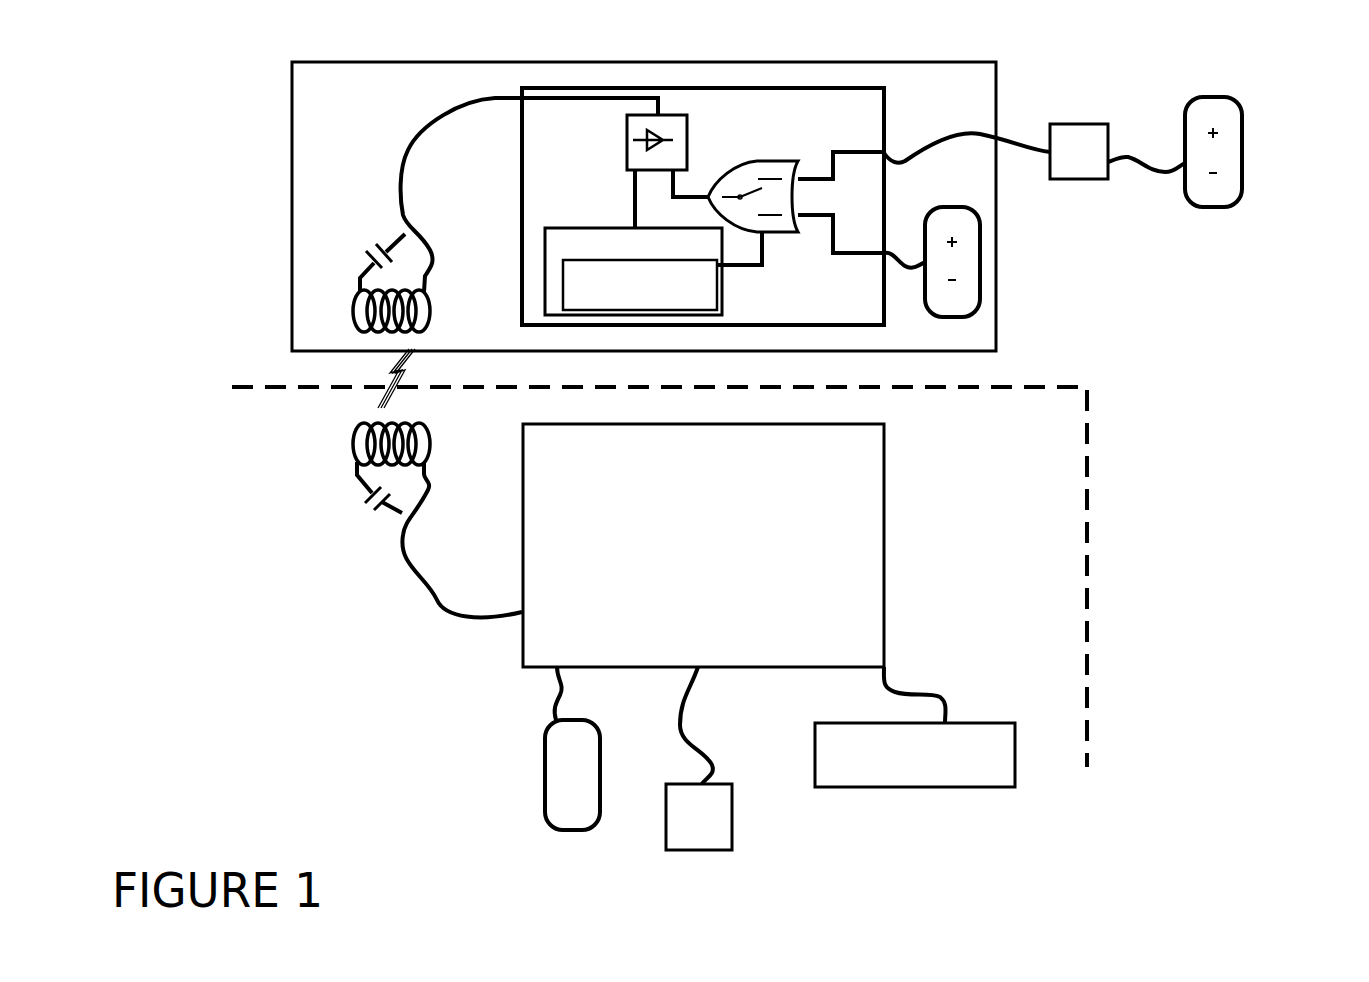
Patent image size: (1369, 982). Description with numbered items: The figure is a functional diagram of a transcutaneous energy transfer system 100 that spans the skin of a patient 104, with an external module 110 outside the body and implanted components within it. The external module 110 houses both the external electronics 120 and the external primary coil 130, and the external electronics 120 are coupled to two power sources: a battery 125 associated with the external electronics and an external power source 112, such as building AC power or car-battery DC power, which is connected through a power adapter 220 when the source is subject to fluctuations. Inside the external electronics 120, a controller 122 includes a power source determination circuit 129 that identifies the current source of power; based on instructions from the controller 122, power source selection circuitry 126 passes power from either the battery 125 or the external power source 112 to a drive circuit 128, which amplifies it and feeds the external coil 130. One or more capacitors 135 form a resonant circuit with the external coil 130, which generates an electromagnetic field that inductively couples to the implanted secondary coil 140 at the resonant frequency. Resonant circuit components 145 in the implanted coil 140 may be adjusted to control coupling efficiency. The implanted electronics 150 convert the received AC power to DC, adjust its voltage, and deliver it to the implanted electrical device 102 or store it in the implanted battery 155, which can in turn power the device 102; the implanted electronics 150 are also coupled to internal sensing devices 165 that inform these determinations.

The system 100 is at (815, 921).
The implanted electrical device 102 is at (973, 793).
The patient 104 is at (659, 577).
The external module 110 is at (317, 60).
The external power source 112 is at (1259, 125).
The external electronics 120 is at (563, 86).
The controller 122 is at (592, 223).
The battery 125 is at (988, 250).
The power source selection circuitry 126 is at (792, 238).
The drive circuit 128 is at (620, 142).
The power source determination circuit 129 is at (719, 298).
The external primary coil 130 is at (347, 313).
The capacitors 135 is at (363, 243).
The implanted secondary coil 140 is at (347, 460).
The resonant circuit components 145 is at (365, 513).
The implanted electronics 150 is at (897, 465).
The implanted battery 155 is at (536, 763).
The internal sensing devices 165 is at (662, 820).
The power adapter 220 is at (1078, 115).